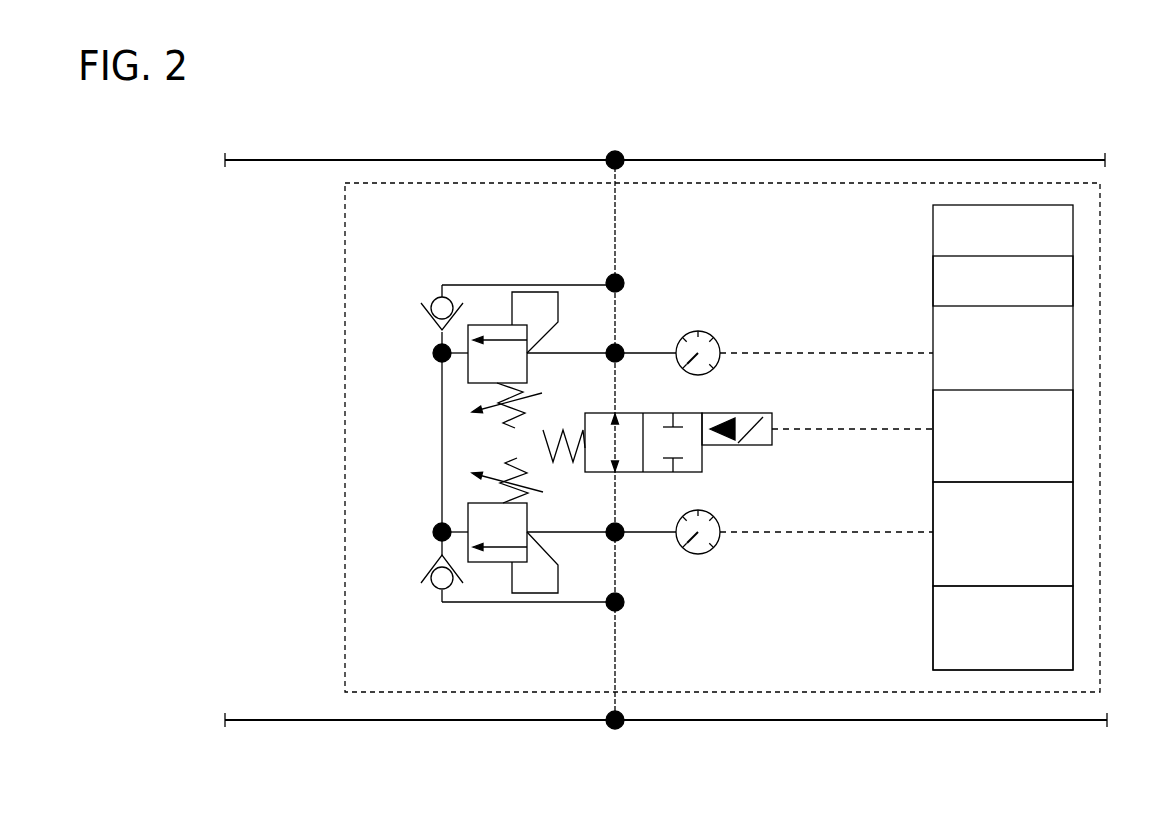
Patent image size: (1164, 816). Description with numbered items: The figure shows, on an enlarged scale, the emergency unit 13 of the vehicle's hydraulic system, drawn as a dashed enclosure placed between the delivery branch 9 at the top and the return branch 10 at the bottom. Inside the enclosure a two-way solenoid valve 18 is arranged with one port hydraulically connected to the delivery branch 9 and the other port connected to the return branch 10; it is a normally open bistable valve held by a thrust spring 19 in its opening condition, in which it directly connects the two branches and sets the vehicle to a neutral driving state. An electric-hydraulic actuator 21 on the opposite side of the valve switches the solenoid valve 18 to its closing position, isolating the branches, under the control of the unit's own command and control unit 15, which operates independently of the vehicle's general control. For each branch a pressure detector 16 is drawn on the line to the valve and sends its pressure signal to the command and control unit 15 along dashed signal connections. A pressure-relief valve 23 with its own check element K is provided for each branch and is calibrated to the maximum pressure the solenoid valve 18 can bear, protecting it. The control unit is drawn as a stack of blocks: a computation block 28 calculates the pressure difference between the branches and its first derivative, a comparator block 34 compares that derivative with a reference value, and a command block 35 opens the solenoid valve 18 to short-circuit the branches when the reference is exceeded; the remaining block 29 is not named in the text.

The delivery branch 9 is at (843, 722).
The return branch 10 is at (872, 160).
The emergency unit 13 is at (566, 700).
The command and control unit 15 is at (1073, 608).
The pressure detector 16 is at (700, 331).
The two-way solenoid valve 18 is at (700, 459).
The thrust spring 19 is at (577, 426).
The electric-hydraulic actuator 21 is at (774, 437).
The pressure-relief valve 23 is at (478, 370).
The computation block 28 is at (942, 623).
The control unit 29 is at (1062, 228).
The comparator block 34 is at (1065, 280).
The command block 35 is at (1060, 447).
The check valve K is at (483, 300).